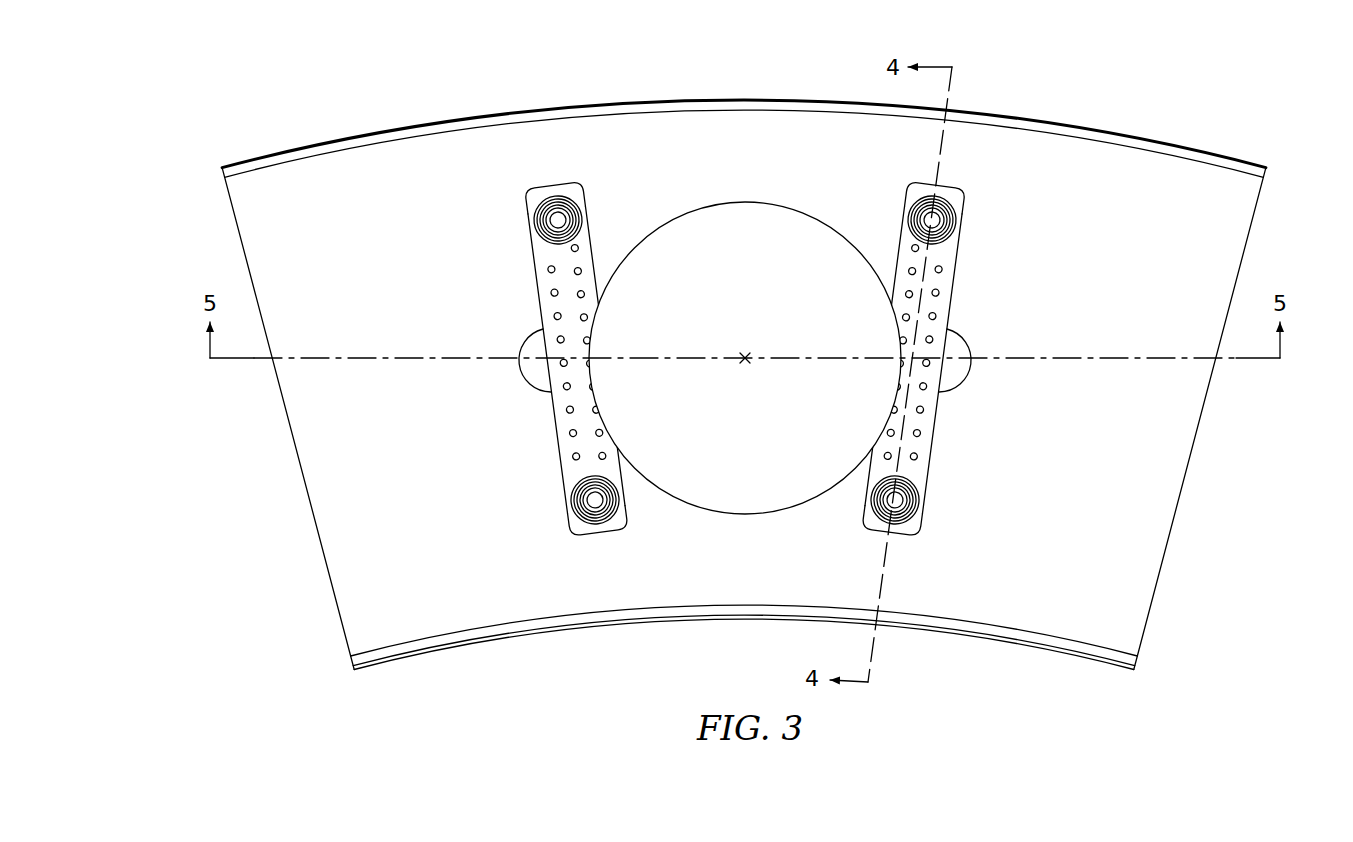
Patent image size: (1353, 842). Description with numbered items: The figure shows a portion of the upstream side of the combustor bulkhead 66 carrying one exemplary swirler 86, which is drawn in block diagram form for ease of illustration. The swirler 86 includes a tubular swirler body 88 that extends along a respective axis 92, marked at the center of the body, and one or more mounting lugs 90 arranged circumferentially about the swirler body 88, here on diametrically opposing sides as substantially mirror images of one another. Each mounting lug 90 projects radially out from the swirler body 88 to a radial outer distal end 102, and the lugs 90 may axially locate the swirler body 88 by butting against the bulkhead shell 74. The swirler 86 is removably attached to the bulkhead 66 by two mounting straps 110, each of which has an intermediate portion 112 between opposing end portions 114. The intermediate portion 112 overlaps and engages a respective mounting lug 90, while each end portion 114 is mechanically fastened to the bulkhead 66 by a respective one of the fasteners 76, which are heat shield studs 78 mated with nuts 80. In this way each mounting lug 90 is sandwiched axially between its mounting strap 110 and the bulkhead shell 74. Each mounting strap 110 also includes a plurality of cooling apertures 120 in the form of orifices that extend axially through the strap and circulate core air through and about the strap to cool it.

The bulkhead 66 is at (1121, 126).
The bulkhead shell 74 is at (1232, 220).
The fasteners 76 is at (536, 226).
The heat shield studs 78 is at (559, 218).
The nuts 80 is at (582, 216).
The swirler 86 is at (745, 516).
The swirler body 88 is at (757, 203).
The mounting lugs 90 is at (533, 392).
The axis 92 is at (745, 364).
The radial outer distal end 102 is at (518, 366).
The mounting straps 110 is at (749, 363).
The intermediate portion 112 is at (532, 292).
The end portions 114 is at (545, 195).
The cooling apertures 120 is at (555, 316).